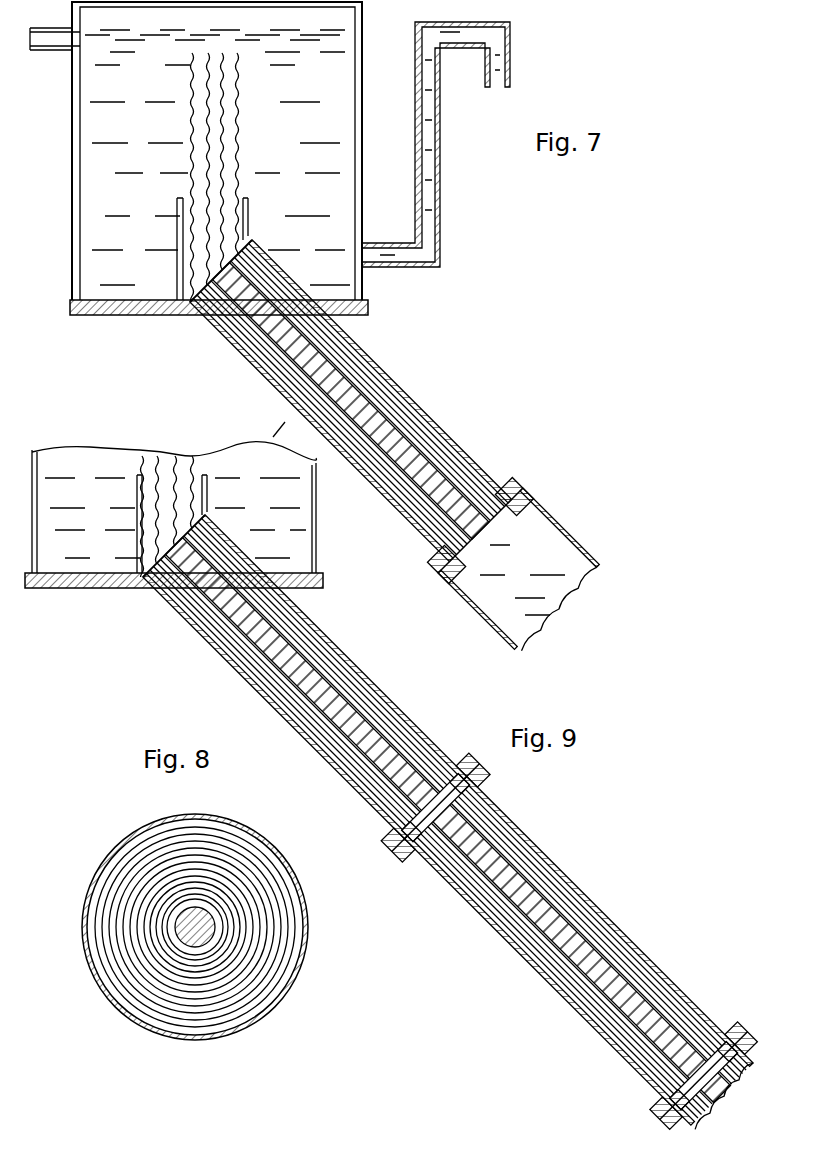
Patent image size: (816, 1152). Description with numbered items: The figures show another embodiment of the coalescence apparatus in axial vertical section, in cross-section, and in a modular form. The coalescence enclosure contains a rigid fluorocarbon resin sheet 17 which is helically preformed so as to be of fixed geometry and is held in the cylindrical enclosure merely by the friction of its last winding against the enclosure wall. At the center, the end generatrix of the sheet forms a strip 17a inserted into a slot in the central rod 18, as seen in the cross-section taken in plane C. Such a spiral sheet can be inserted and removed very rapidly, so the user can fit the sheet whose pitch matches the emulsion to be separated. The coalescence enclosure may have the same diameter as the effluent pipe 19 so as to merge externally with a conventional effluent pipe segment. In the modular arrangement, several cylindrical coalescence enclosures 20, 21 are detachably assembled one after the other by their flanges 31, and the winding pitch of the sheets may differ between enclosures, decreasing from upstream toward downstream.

In FIG. 7, the rigid fluorocarbon resin sheet 17 is at (386, 396).
In FIG. 8, the rigid fluorocarbon resin sheet 17 is at (223, 937).
In FIG. 8, the strip 17a is at (207, 917).
In FIG. 7, the central rod 18 is at (428, 478).
In FIG. 8, the central rod 18 is at (192, 925).
In FIG. 7, the effluent pipe 19 is at (545, 547).
In FIG. 9, the cylindrical coalescence enclosure 20 is at (380, 688).
In FIG. 9, the cylindrical coalescence enclosure 21 is at (570, 880).
In FIG. 9, the flanges 31 is at (474, 757).
In FIG. 7, the plane C is at (397, 447).